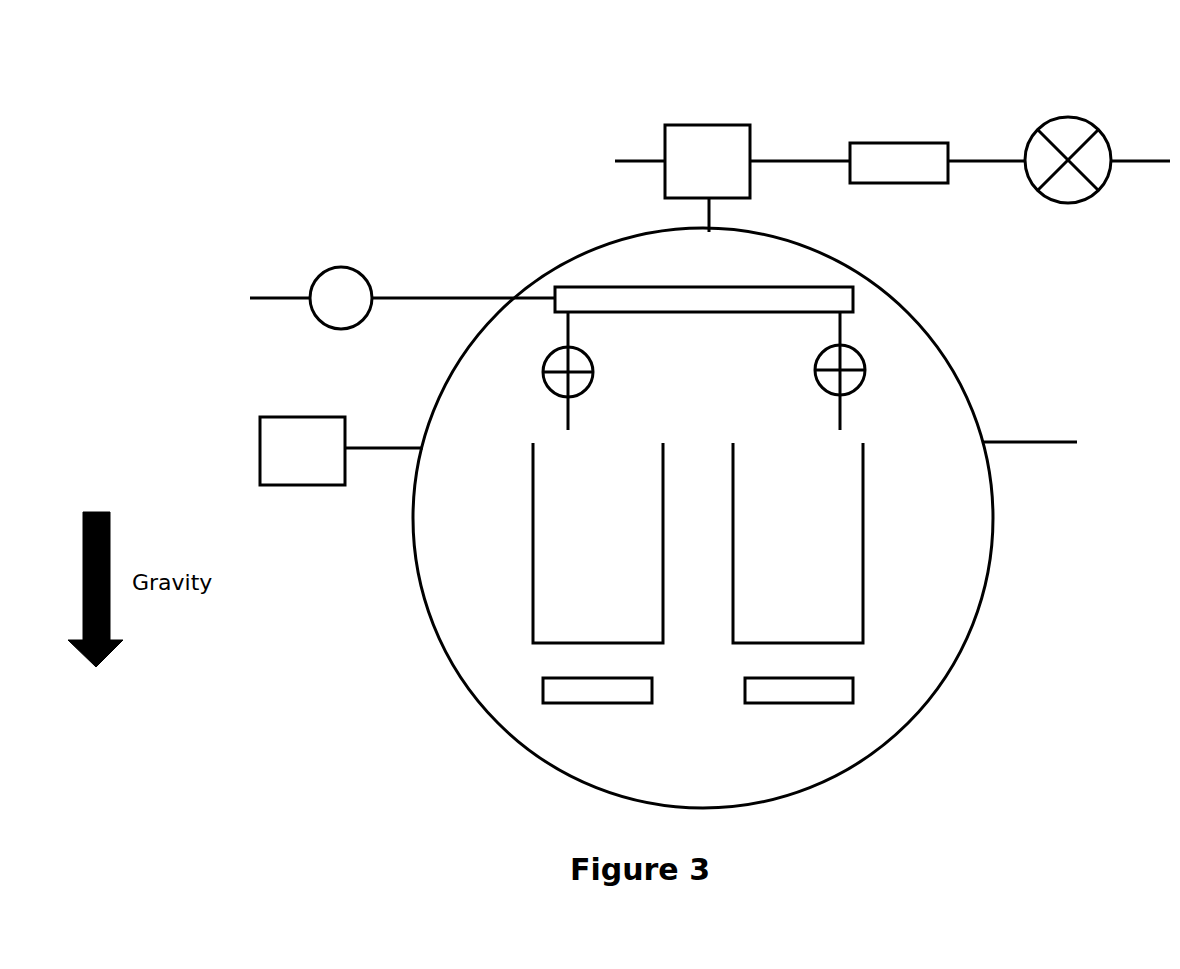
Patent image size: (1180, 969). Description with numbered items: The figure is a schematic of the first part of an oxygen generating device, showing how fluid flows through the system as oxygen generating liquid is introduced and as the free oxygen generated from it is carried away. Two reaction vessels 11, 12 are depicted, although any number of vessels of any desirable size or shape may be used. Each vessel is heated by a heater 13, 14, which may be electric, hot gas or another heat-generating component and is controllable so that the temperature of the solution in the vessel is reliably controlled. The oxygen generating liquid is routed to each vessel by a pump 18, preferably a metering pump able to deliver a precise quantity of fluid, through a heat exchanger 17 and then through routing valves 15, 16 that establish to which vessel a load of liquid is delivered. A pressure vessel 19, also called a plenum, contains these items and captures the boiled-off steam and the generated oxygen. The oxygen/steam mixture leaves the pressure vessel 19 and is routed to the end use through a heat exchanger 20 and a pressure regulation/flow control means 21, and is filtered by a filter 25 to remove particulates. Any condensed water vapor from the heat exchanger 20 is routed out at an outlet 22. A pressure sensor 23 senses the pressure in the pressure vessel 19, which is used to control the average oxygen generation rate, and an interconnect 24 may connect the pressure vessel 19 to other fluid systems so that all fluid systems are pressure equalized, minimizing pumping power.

The reaction vessel 11 is at (598, 543).
The reaction vessel 12 is at (798, 543).
The heater 13 is at (580, 695).
The heater 14 is at (800, 695).
The routing valve 15 is at (560, 380).
The routing valve 16 is at (860, 393).
The heat exchanger 17 is at (708, 300).
The pump 18 is at (342, 285).
The pressure vessel 19 is at (940, 330).
The heat exchanger 20 is at (707, 178).
The pressure regulation/flow control means 21 is at (1068, 137).
The condensed water outlet 22 is at (638, 161).
The pressure sensor 23 is at (341, 451).
The interconnect 24 is at (1053, 445).
The filter 25 is at (893, 158).